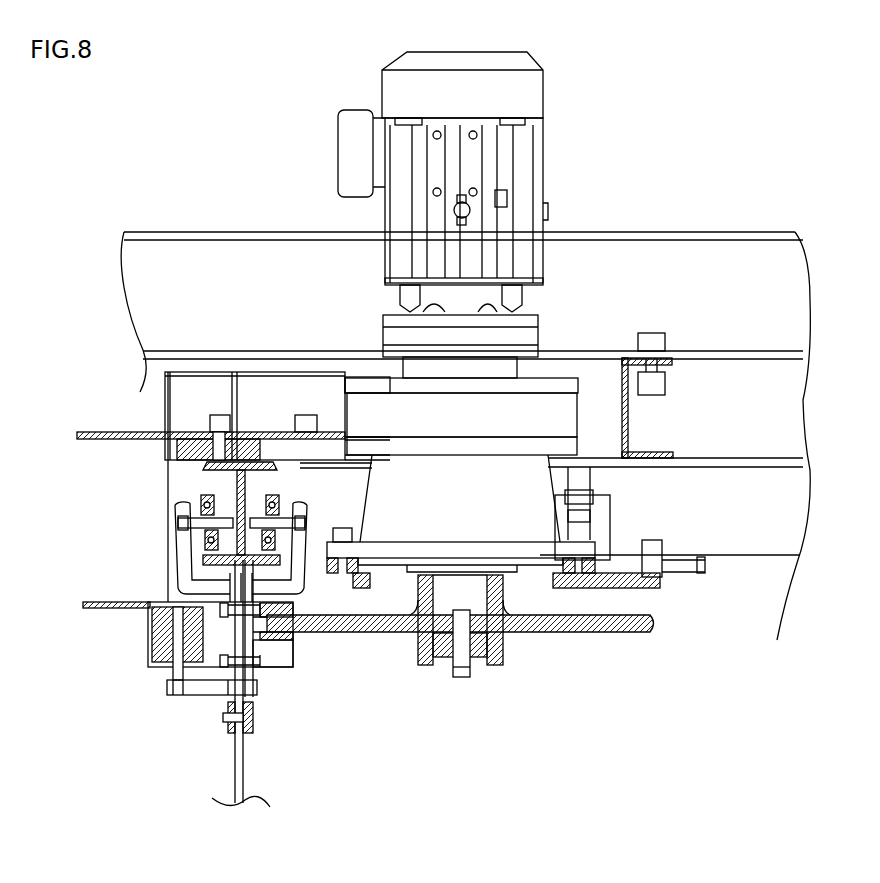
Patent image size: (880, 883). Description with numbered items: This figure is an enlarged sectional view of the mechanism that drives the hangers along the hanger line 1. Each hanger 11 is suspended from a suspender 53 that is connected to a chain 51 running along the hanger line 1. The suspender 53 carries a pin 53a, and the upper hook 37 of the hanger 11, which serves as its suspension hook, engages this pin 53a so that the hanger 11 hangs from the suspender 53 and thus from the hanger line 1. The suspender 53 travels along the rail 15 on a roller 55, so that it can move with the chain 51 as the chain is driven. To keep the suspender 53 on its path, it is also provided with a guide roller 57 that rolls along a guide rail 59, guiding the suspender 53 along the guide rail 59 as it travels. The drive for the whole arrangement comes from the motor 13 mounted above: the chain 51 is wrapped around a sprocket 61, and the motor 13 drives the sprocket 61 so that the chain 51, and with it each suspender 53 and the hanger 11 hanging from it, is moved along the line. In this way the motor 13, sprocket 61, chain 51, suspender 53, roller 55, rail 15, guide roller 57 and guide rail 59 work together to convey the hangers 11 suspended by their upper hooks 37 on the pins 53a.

The hanger line 1 is at (716, 215).
The motor 13 is at (502, 52).
The rail 15 is at (237, 483).
The roller 55 is at (267, 496).
The guide rail 59 is at (123, 610).
The guide roller 57 is at (160, 633).
The upper hook (suspension hook) 37 is at (230, 700).
The suspender 53 is at (255, 697).
The pin 53a is at (220, 718).
The hanger 11 is at (238, 763).
The chain 51 is at (293, 647).
The sprocket 61 is at (380, 628).